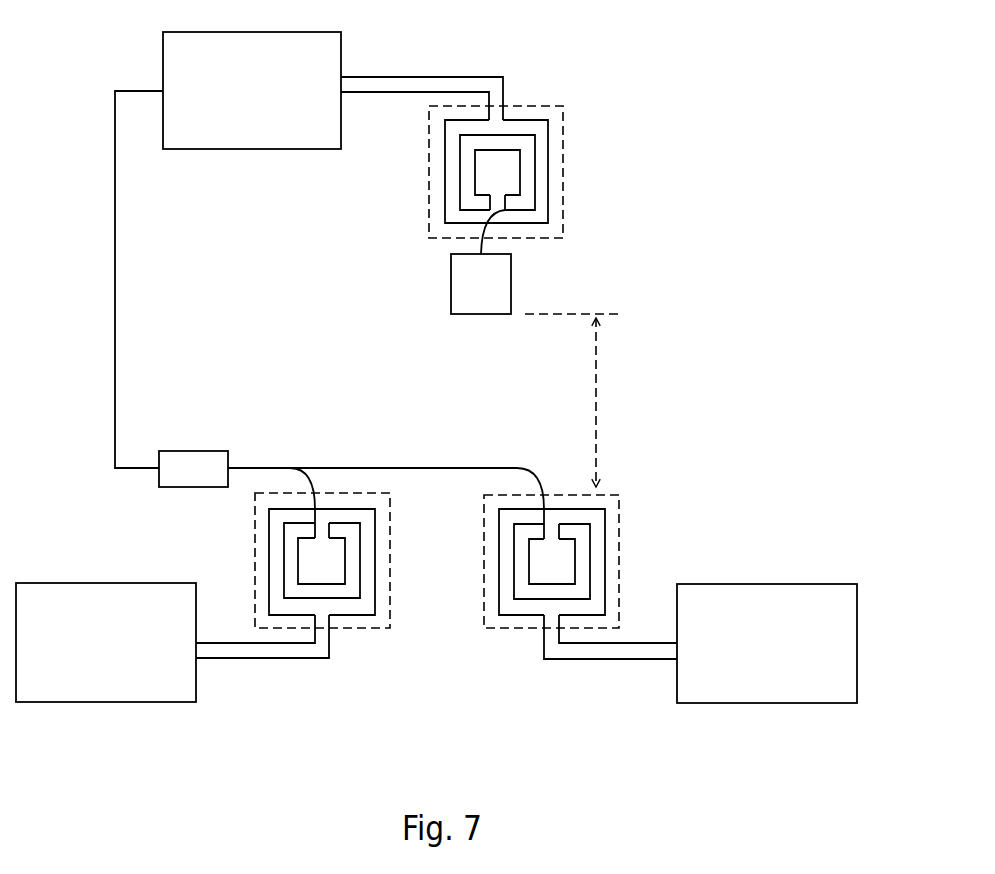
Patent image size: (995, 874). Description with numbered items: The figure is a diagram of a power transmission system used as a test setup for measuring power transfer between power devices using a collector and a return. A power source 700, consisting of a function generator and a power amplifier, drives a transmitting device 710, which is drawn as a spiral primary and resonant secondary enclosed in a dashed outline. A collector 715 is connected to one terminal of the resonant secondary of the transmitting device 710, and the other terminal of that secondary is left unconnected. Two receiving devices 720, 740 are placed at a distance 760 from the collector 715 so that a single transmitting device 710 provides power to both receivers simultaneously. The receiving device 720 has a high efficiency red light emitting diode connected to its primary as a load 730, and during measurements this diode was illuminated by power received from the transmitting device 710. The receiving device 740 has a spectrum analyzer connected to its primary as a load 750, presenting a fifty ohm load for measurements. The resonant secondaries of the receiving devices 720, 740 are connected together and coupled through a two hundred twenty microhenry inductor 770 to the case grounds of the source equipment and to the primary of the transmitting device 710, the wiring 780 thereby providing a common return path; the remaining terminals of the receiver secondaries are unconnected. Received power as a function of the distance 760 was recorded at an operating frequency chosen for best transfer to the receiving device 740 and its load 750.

The power source 700 is at (252, 90).
The transmitting device 710 is at (490, 159).
The collector 715 is at (441, 296).
The receiving device 720 is at (587, 538).
The load 730 is at (700, 643).
The receiving device 740 is at (325, 572).
The load 750 is at (172, 642).
The distance 760 is at (619, 384).
The inductor 770 is at (198, 447).
The return wire 780 is at (131, 308).